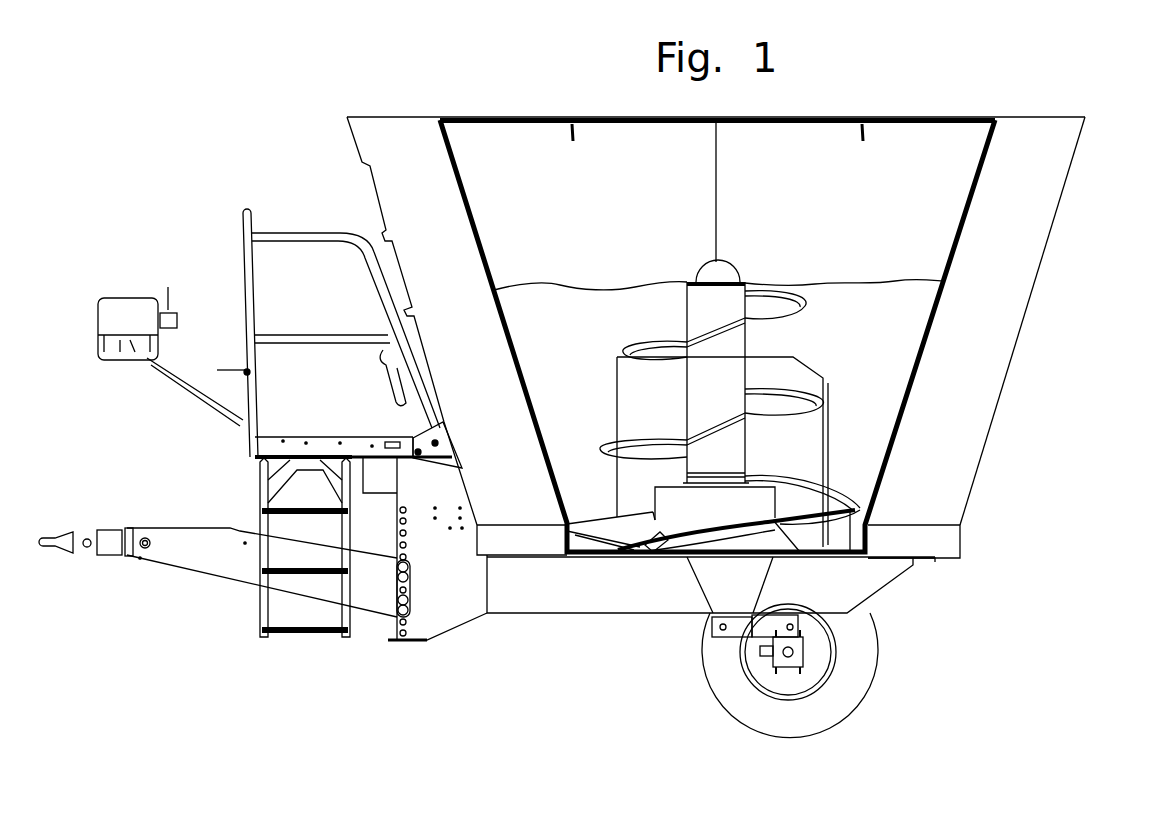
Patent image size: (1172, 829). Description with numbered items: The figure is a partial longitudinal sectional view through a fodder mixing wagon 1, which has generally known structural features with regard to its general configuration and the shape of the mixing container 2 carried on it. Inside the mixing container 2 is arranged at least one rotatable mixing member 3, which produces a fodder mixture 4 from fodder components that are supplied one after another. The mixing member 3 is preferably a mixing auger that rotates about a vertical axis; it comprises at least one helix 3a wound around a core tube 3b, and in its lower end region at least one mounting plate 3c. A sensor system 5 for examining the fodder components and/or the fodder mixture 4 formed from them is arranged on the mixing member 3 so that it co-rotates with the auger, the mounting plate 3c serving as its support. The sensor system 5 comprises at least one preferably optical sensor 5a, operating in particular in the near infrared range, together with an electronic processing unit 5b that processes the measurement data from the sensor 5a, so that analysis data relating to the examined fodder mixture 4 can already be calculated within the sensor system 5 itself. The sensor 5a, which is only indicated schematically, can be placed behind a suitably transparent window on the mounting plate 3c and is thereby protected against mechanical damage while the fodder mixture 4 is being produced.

The fodder mixing wagon 1 is at (518, 630).
The mixing container 2 is at (1052, 233).
The mixing member 3 is at (743, 248).
The helix 3a is at (780, 325).
The core tube 3b is at (708, 503).
The mounting plate 3c is at (787, 513).
The fodder mixture 4 is at (873, 380).
The sensor system 5 is at (630, 563).
The sensor 5a is at (633, 530).
The electronic processing unit 5b is at (655, 563).